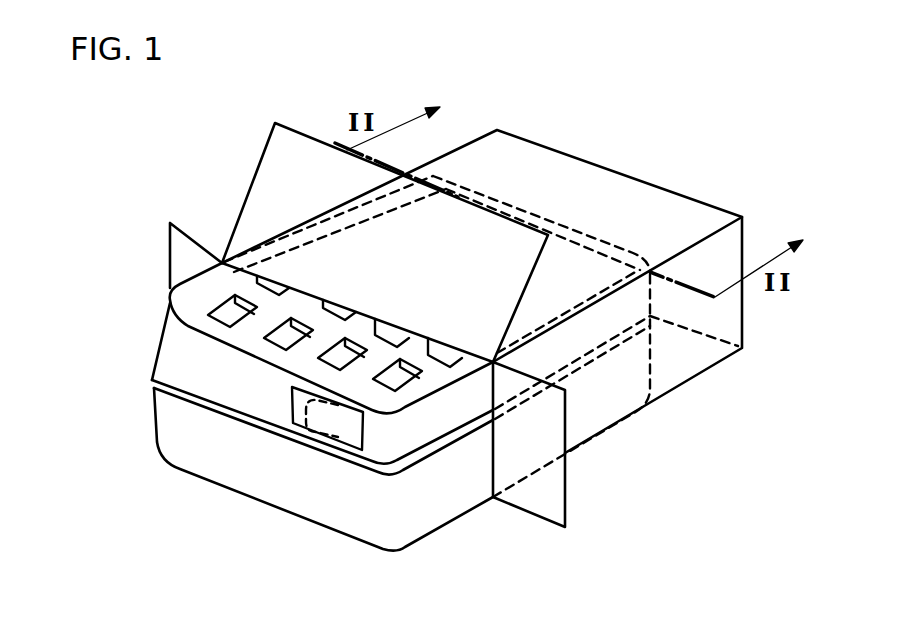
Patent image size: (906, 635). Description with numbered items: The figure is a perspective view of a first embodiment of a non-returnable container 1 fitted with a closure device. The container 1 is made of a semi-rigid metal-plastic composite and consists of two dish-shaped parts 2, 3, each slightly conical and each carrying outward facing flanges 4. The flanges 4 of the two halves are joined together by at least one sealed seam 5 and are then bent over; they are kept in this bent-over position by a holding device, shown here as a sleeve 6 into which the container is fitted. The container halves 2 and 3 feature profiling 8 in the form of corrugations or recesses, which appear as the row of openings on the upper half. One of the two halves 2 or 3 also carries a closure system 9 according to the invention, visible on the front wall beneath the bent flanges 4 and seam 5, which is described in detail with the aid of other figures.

The non-returnable container 1 is at (441, 538).
The dish-shaped part 2 is at (177, 438).
The dish-shaped part 3 is at (177, 357).
The outward facing flange 4 is at (153, 380).
The sealed seam 5 is at (153, 380).
The sleeve 6 is at (685, 362).
The profiling 8 is at (208, 317).
The closure system 9 is at (293, 425).